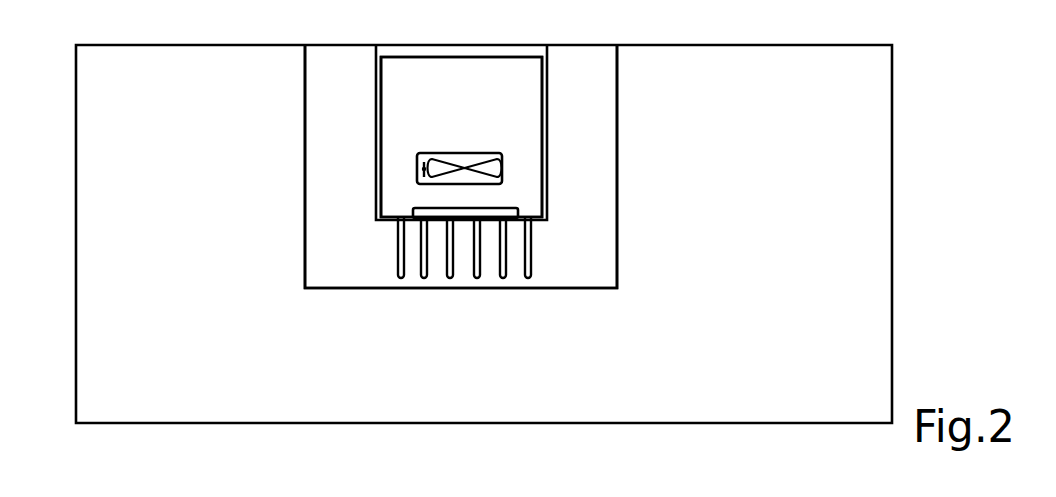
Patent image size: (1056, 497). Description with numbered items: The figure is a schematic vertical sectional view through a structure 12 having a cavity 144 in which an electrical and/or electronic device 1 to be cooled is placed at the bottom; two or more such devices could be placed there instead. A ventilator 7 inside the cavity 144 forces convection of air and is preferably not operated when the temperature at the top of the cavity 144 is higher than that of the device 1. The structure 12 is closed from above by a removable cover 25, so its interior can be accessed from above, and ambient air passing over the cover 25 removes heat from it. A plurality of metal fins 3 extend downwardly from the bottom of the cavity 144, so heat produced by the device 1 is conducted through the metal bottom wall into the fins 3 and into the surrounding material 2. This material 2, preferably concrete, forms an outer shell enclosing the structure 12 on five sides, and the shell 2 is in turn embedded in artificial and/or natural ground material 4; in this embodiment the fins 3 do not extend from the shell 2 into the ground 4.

The electrical and/or electronic device 1 is at (498, 208).
The surrounding material 2 is at (353, 155).
The fins 3 is at (396, 248).
The ground material 4 is at (457, 375).
The ventilator 7 is at (536, 213).
The structure 12 is at (382, 78).
The removable cover 25 is at (487, 50).
The cavity 144 is at (497, 107).